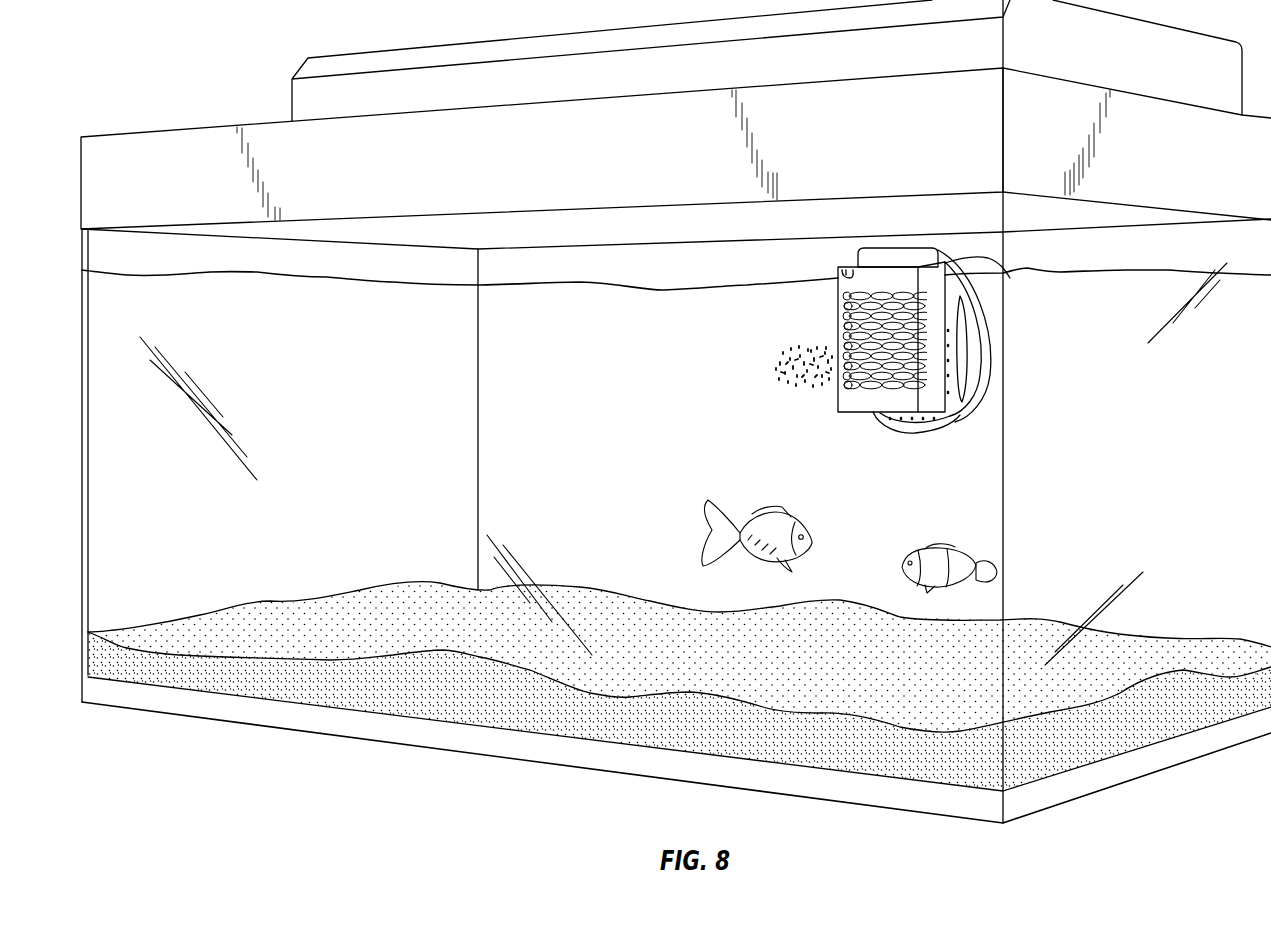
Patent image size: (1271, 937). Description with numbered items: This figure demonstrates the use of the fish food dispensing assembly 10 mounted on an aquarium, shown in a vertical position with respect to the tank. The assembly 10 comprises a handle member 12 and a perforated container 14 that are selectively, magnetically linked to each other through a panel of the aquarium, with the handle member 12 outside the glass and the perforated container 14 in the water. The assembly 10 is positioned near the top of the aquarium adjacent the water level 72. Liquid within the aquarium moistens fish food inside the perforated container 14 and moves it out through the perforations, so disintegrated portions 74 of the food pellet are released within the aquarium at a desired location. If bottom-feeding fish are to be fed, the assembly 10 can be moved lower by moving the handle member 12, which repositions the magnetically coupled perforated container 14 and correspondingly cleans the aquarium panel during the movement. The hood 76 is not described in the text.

The fish food dispensing assembly 10 is at (909, 290).
The handle member 12 is at (1010, 278).
The perforated container 14 is at (883, 257).
The water level 72 is at (253, 273).
The disintegrated portions 74 is at (775, 372).
The aquarium hood 76 is at (244, 93).